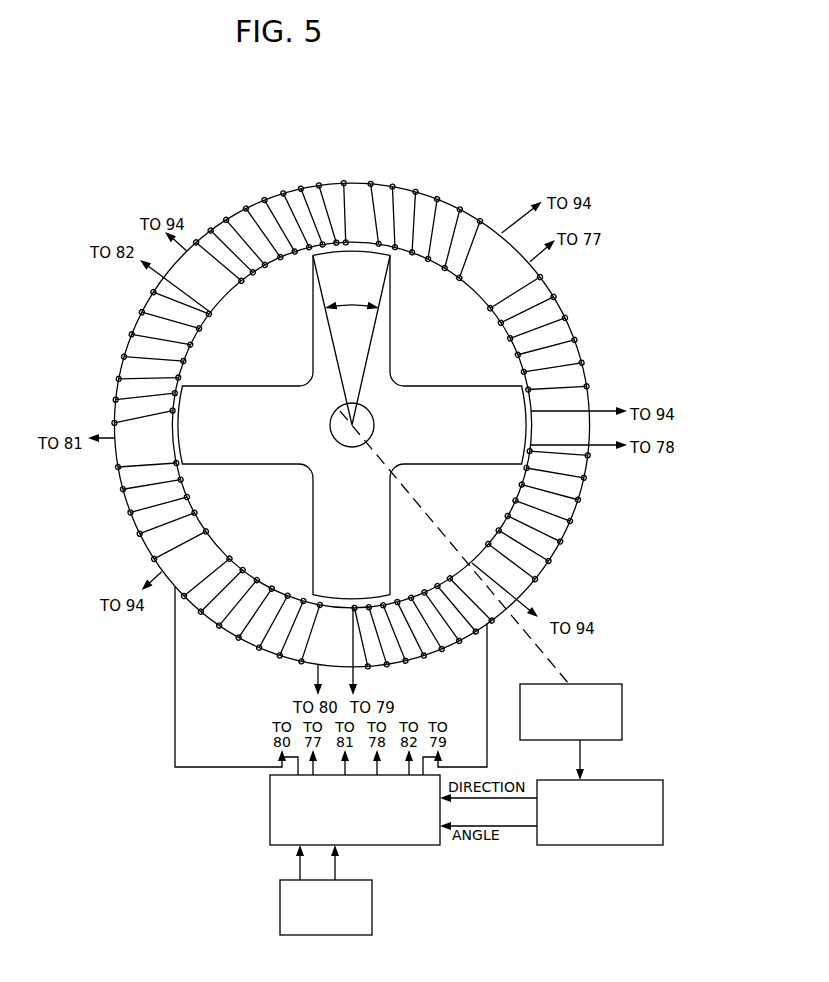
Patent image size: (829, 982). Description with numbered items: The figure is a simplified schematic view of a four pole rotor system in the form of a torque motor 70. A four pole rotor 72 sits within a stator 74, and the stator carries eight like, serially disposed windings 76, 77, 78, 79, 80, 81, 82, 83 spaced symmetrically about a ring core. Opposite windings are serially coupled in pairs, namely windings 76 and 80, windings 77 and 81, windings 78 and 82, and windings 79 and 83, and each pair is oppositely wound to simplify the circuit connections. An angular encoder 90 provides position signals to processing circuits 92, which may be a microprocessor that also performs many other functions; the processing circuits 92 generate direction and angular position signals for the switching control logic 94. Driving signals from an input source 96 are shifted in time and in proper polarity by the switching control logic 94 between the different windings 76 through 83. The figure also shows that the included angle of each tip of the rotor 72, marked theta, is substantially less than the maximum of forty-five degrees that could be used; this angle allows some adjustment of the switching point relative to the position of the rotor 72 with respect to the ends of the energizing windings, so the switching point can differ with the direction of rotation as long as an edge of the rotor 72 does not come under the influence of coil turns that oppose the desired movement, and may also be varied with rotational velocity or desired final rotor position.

The torque motor 70 is at (380, 392).
The four pole rotor 72 is at (430, 383).
The stator 74 is at (583, 400).
The winding 76 is at (232, 641).
The winding 77 is at (130, 535).
The winding 78 is at (140, 313).
The winding 79 is at (245, 209).
The winding 80 is at (463, 211).
The winding 81 is at (556, 297).
The winding 82 is at (588, 473).
The winding 83 is at (447, 650).
The angular encoder 90 is at (622, 722).
The processing circuits 92 is at (663, 804).
The switching control logic 94 is at (270, 836).
The input source 96 is at (372, 914).